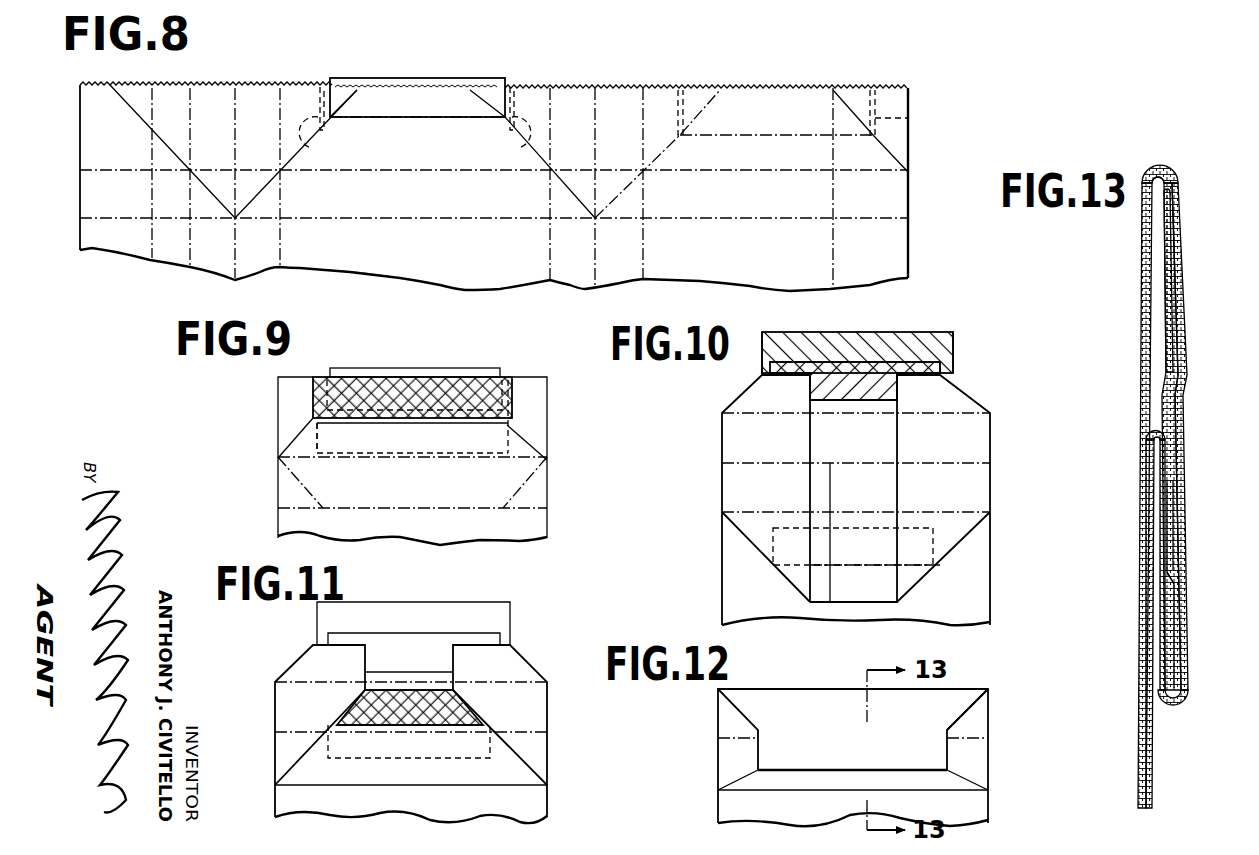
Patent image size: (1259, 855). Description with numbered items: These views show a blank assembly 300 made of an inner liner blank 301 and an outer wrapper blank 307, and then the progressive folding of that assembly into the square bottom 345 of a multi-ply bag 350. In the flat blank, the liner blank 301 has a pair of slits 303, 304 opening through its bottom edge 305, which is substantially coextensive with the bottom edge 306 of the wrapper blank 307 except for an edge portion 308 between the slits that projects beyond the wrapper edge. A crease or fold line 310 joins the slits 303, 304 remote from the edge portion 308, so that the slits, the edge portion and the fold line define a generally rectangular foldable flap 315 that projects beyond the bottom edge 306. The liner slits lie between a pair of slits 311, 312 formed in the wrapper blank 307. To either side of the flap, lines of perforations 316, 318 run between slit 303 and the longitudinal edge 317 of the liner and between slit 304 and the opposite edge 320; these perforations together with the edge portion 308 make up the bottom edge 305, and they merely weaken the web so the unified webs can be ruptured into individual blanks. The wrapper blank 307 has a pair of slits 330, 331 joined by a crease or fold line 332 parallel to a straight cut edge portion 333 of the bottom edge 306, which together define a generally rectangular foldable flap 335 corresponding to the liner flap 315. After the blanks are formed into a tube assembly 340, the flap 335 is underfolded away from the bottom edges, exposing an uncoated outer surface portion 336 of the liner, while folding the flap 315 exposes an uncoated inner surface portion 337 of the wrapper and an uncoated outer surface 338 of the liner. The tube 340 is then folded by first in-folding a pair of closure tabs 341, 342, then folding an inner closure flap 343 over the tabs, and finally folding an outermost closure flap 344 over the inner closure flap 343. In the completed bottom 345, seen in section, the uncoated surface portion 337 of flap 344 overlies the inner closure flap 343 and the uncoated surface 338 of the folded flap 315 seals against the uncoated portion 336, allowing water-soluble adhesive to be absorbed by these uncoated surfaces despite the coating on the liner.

In FIG. 8, the blank assembly 300 is at (928, 112).
In FIG. 8, the liner blank 301 is at (454, 272).
In FIG. 10, the liner blank 301 is at (881, 590).
In FIG. 8, the slit 303 is at (330, 86).
In FIG. 8, the slit 304 is at (515, 89).
In FIG. 8, the bottom edge of liner blank 305 is at (635, 88).
In FIG. 9, the bottom edge of liner blank 305 is at (528, 376).
In FIG. 8, the bottom edge of wrapper blank 306 is at (456, 86).
In FIG. 9, the bottom edge of wrapper blank 306 is at (555, 413).
In FIG. 8, the wrapper blank 307 is at (892, 229).
In FIG. 8, the edge portion 308 is at (396, 78).
In FIG. 9, the edge portion 308 is at (395, 369).
In FIG. 8, the crease or fold line 310 is at (430, 118).
In FIG. 8, the slit 311 is at (321, 143).
In FIG. 10, the slit 311 is at (760, 352).
In FIG. 8, the slit 312 is at (514, 134).
In FIG. 10, the slit 312 is at (956, 368).
In FIG. 8, the foldable flap 315 is at (405, 105).
In FIG. 10, the foldable flap 315 is at (866, 370).
In FIG. 11, the foldable flap 315 is at (400, 667).
In FIG. 13, the foldable flap 315 is at (1183, 356).
In FIG. 8, the line of perforations 316 is at (232, 85).
In FIG. 8, the longitudinal edge of liner blank 317 is at (80, 147).
In FIG. 8, the line of perforations 318 is at (877, 92).
In FIG. 8, the edge of liner blank 320 is at (834, 279).
In FIG. 8, the slit 330 is at (689, 93).
In FIG. 9, the slit 330 is at (510, 433).
In FIG. 8, the slit 331 is at (908, 118).
In FIG. 9, the slit 331 is at (313, 398).
In FIG. 8, the crease or fold line 332 is at (766, 135).
In FIG. 9, the crease or fold line 332 is at (442, 410).
In FIG. 8, the straight cut edge portion 333 is at (777, 89).
In FIG. 9, the straight cut edge portion 333 is at (391, 455).
In FIG. 8, the foldable flap 335 is at (750, 113).
In FIG. 9, the foldable flap 335 is at (436, 438).
In FIG. 11, the foldable flap 335 is at (370, 742).
In FIG. 13, the foldable flap 335 is at (1178, 473).
In FIG. 9, the outer uncoated surface portion of liner 336 is at (348, 382).
In FIG. 13, the outer uncoated surface portion of liner 336 is at (1174, 316).
In FIG. 10, the uncoated inner surface portion of wrapper 337 is at (931, 340).
In FIG. 13, the uncoated inner surface portion of wrapper 337 is at (1183, 588).
In FIG. 10, the uncoated outer surface of liner 338 is at (890, 386).
In FIG. 13, the uncoated outer surface of liner 338 is at (1166, 238).
In FIG. 9, the tube assembly 340 is at (560, 455).
In FIG. 10, the closure tab 341 is at (742, 436).
In FIG. 11, the closure tab 341 is at (302, 702).
In FIG. 10, the closure tab 342 is at (962, 449).
In FIG. 11, the inner closure flap 343 is at (503, 772).
In FIG. 12, the inner closure flap 343 is at (775, 778).
In FIG. 13, the inner closure flap 343 is at (1188, 660).
In FIG. 10, the outermost closure flap 344 is at (803, 315).
In FIG. 11, the outermost closure flap 344 is at (510, 627).
In FIG. 12, the outermost closure flap 344 is at (805, 715).
In FIG. 13, the outermost closure flap 344 is at (1190, 540).
In FIG. 12, the square bottom 345 is at (988, 682).
In FIG. 13, the square bottom 345 is at (1185, 423).
In FIG. 12, the multi-ply bag 350 is at (998, 812).
In FIG. 13, the multi-ply bag 350 is at (1136, 724).